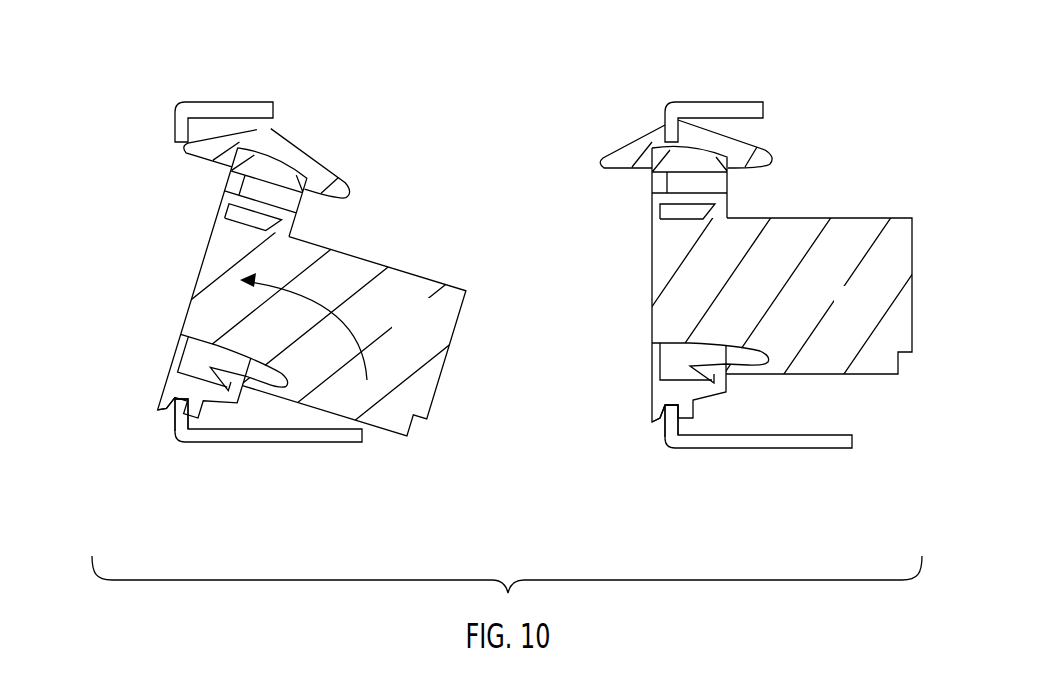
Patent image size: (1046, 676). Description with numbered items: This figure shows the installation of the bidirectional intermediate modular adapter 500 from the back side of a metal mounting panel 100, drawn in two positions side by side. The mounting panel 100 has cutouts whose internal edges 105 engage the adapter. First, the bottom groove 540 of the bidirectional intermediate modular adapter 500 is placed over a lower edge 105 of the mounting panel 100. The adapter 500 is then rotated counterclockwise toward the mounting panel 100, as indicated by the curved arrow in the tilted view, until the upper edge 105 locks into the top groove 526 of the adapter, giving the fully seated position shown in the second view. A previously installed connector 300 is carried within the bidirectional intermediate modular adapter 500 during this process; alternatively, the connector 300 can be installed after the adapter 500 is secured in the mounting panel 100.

The metal mounting panel 100 is at (280, 428).
The internal edge 105 is at (173, 124).
The connector 300 is at (394, 328).
The bidirectional intermediate modular adapter 500 is at (350, 232).
The top groove 526 is at (268, 127).
The bottom groove 540 is at (177, 402).